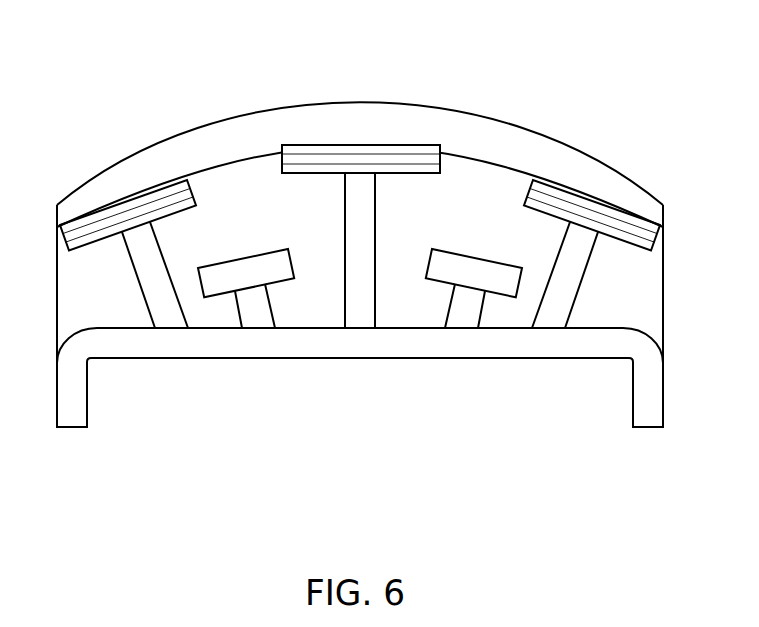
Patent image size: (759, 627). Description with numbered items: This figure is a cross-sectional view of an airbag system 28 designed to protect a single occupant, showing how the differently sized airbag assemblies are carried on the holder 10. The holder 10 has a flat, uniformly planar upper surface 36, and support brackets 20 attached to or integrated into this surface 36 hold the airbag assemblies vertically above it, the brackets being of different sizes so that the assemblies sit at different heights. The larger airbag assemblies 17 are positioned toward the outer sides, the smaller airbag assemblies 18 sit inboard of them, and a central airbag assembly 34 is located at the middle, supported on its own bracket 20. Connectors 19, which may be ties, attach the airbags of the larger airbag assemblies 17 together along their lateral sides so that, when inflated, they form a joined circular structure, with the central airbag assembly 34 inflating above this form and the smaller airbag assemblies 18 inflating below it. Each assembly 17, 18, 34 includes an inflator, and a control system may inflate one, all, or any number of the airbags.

The holder 10 is at (210, 350).
The airbag assembly 17 is at (125, 201).
The airbag assembly 18 is at (243, 258).
The connector 19 is at (210, 167).
The support bracket 20 is at (167, 307).
The airbag system 28 is at (162, 141).
The central airbag assembly 34 is at (386, 145).
The upper surface 36 is at (606, 327).